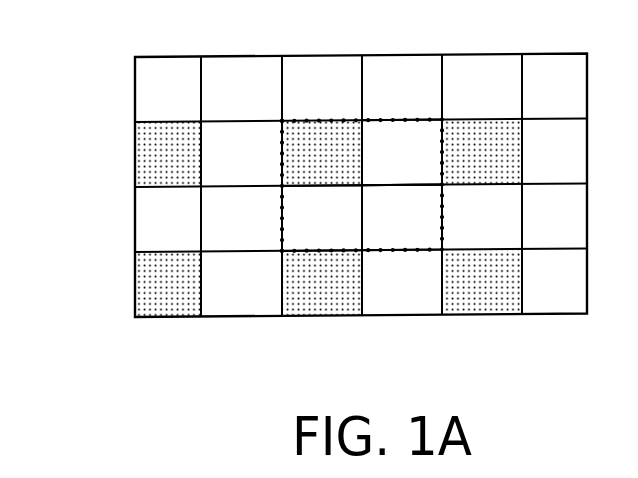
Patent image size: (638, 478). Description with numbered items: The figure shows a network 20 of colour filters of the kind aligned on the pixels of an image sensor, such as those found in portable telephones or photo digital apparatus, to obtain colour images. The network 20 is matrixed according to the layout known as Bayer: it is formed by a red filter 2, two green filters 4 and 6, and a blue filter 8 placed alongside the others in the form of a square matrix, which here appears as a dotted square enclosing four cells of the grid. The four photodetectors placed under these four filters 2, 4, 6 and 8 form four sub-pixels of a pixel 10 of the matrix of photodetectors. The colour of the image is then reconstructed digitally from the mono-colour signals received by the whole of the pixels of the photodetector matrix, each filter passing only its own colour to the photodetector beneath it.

The network of colour filters 20 is at (110, 155).
The pixel 10 is at (297, 119).
The red filter 2 is at (318, 142).
The green filter 4 is at (309, 253).
The green filter 6 is at (402, 142).
The blue filter 8 is at (408, 242).